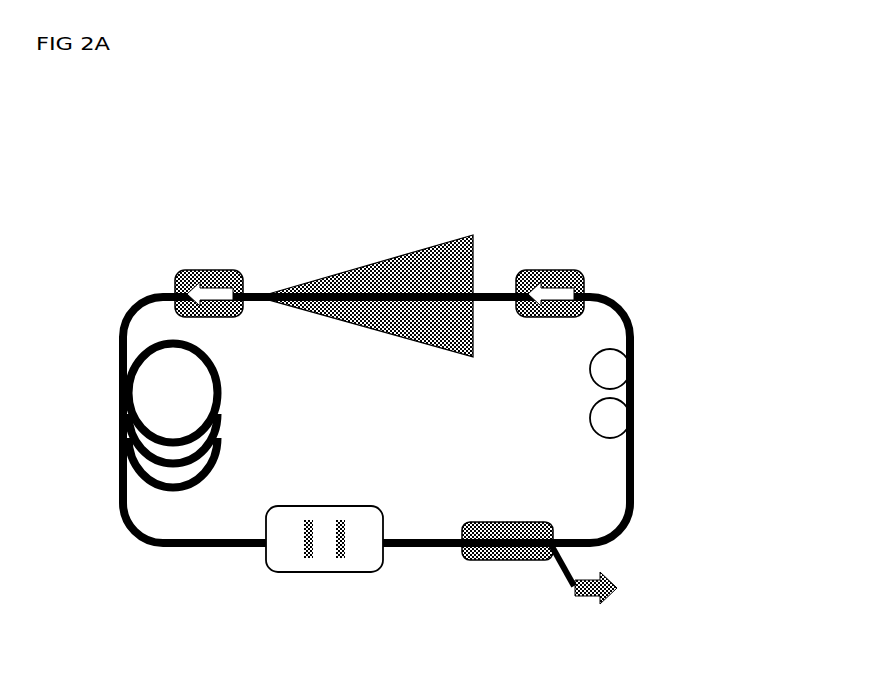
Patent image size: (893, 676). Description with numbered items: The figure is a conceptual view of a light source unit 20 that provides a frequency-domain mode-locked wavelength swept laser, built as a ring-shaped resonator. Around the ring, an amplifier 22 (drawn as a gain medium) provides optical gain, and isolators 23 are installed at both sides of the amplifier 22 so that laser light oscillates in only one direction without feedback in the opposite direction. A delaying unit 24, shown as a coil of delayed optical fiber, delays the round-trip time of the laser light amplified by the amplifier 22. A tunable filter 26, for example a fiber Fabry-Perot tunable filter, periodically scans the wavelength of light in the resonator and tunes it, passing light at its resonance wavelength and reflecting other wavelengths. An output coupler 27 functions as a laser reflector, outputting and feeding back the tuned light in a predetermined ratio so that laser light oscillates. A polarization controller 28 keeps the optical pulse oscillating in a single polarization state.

The light source unit 20 is at (131, 121).
The amplifier 22 is at (368, 263).
The isolators 23 is at (206, 232).
The delaying unit 24 is at (140, 352).
The tunable filter 26 is at (322, 573).
The output coupler 27 is at (505, 561).
The polarization controller 28 is at (630, 350).